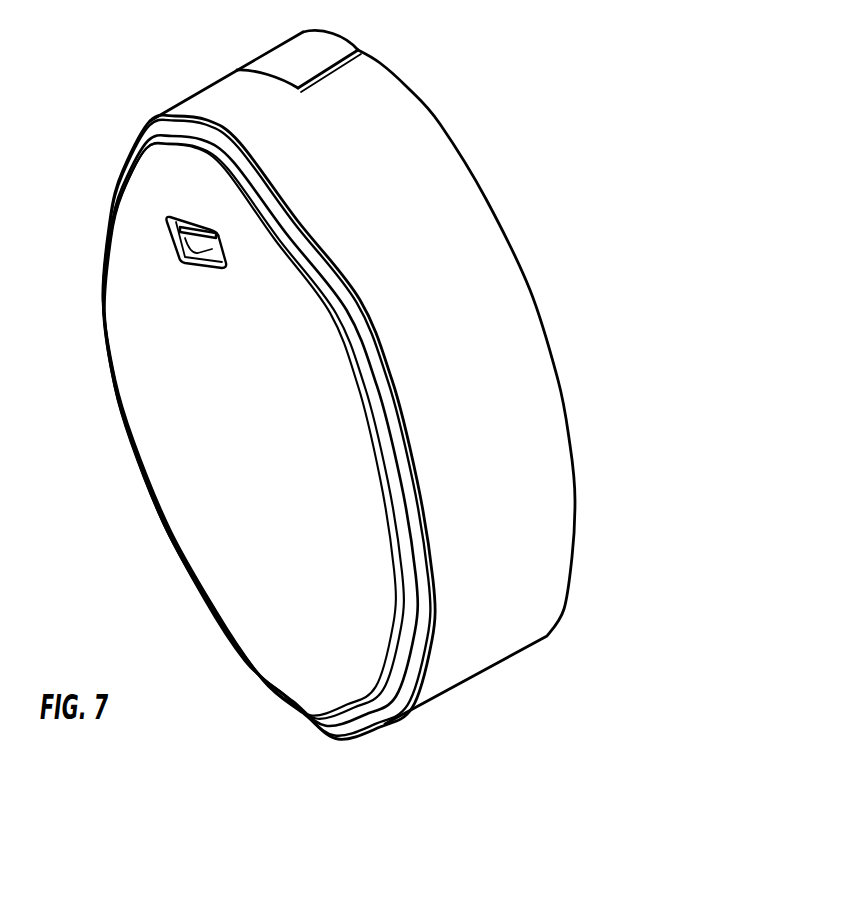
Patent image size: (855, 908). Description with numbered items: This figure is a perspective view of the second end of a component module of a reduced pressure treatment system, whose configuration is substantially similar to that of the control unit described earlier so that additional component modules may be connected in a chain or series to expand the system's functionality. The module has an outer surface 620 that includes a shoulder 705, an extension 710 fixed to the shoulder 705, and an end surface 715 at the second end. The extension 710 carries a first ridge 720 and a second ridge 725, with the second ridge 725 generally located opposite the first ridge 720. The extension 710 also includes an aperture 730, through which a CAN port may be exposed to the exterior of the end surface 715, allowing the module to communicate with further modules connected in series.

The outer surface 620 is at (397, 100).
The shoulder 705 is at (137, 137).
The extension 710 is at (410, 597).
The end surface 715 is at (146, 438).
The first ridge 720 is at (157, 135).
The second ridge 725 is at (350, 731).
The aperture 730 is at (210, 247).